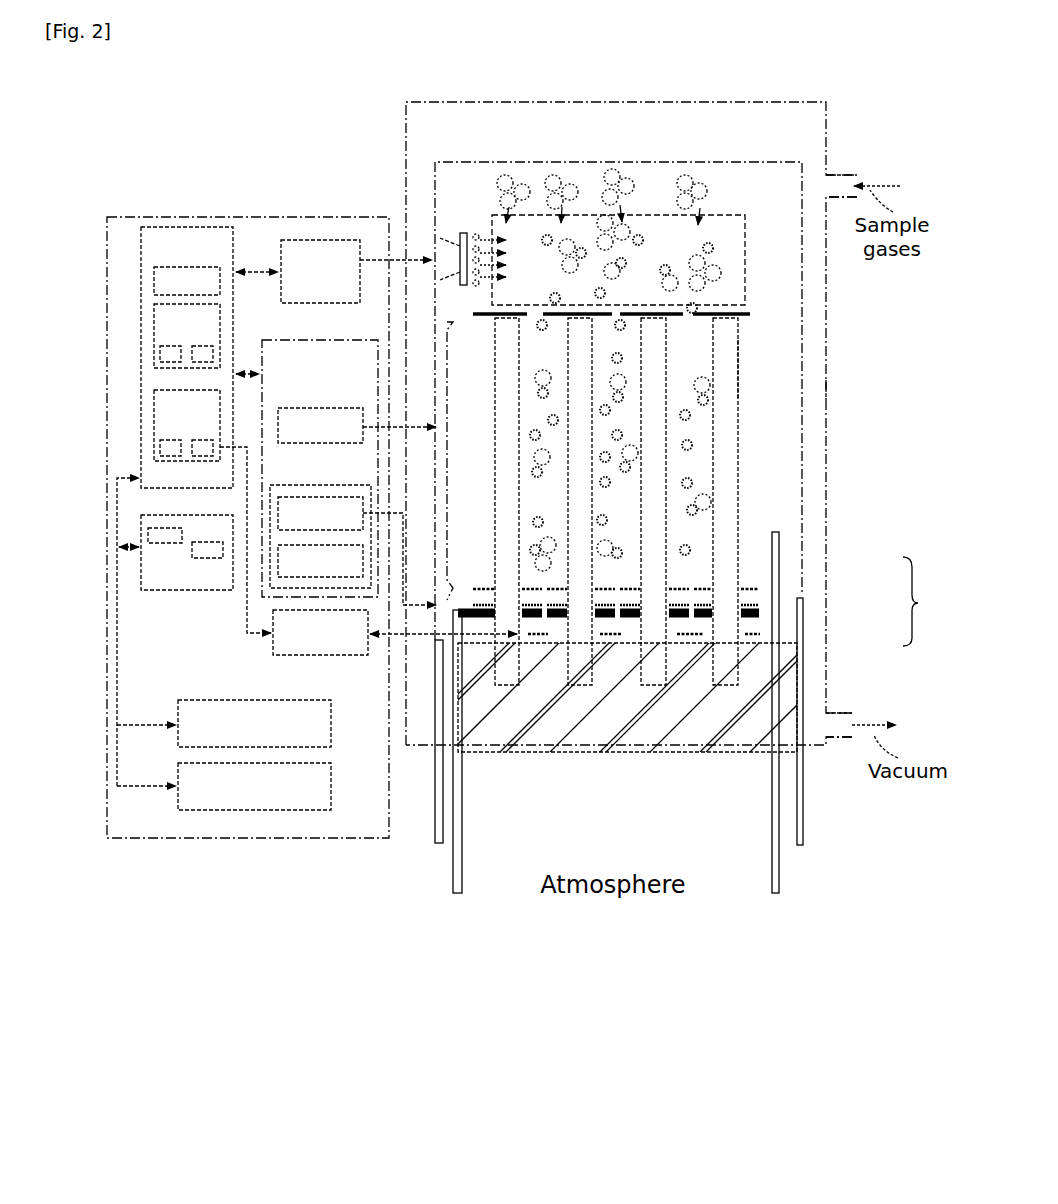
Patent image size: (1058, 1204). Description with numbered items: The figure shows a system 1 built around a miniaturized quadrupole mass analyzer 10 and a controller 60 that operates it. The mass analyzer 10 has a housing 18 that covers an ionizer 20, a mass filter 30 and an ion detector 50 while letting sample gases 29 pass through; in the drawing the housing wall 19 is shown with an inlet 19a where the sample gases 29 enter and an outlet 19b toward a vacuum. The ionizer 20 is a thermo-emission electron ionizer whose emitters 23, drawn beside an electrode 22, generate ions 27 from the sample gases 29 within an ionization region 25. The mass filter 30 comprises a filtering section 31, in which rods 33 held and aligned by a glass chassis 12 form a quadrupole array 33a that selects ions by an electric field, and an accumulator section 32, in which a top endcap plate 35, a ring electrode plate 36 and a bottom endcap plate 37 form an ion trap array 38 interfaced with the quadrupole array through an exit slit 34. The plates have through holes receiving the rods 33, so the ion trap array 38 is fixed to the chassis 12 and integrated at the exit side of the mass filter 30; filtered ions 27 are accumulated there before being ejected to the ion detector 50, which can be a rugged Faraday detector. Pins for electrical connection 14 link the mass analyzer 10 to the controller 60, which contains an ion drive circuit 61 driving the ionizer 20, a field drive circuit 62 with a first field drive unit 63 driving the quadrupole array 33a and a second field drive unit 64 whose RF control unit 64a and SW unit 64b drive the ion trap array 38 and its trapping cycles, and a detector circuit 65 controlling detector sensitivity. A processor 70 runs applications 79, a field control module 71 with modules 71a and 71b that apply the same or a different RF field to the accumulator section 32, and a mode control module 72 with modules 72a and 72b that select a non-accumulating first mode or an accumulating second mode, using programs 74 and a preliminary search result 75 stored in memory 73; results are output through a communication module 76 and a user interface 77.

The system 1 is at (316, 969).
The mass analyzer 10 is at (477, 151).
The glass chassis 12 is at (777, 715).
The pins for electrical connection 14 is at (776, 540).
The housing 18 is at (523, 162).
The chamber wall 19 is at (828, 392).
The sample gas inlet 19a is at (845, 177).
The vacuum outlet 19b is at (838, 737).
The ionizer 20 is at (436, 231).
The ionization electrode 22 is at (478, 230).
The emitters 23 is at (480, 230).
The ionization zone 25 is at (755, 313).
The ions 27 is at (640, 238).
The sample gases 29 is at (700, 190).
The mass filter 30 is at (757, 464).
The filtering section 31 is at (440, 397).
The accumulator section 32 is at (437, 604).
The rods 33 is at (735, 342).
The quadrupole array 33a is at (744, 362).
The exit slit 34 is at (752, 584).
The top endcap plate 35 is at (745, 592).
The ring electrode plate 36 is at (745, 606).
The bottom endcap plate 37 is at (745, 618).
The ion trap array 38 is at (927, 601).
The ion detector 50 is at (687, 637).
The controller 60 is at (262, 218).
The ion drive circuit 61 is at (300, 240).
The field drive circuit 62 is at (275, 340).
The first field drive unit 63 is at (350, 408).
The second field drive unit 64 is at (345, 485).
The RF control unit 64a is at (305, 497).
The gate control unit 64b is at (280, 565).
The detector circuit 65 is at (275, 648).
The processor 70 is at (157, 245).
The field control module 71 is at (158, 313).
The module 71a is at (160, 355).
The module 71b is at (200, 358).
The mode control module 72 is at (158, 397).
The module 72a is at (160, 445).
The module 72b is at (200, 448).
The memory 73 is at (141, 578).
The programs 74 is at (150, 535).
The preliminary search result 75 is at (192, 548).
The communication module 76 is at (178, 735).
The user interface 77 is at (178, 797).
The applications 79 is at (158, 283).